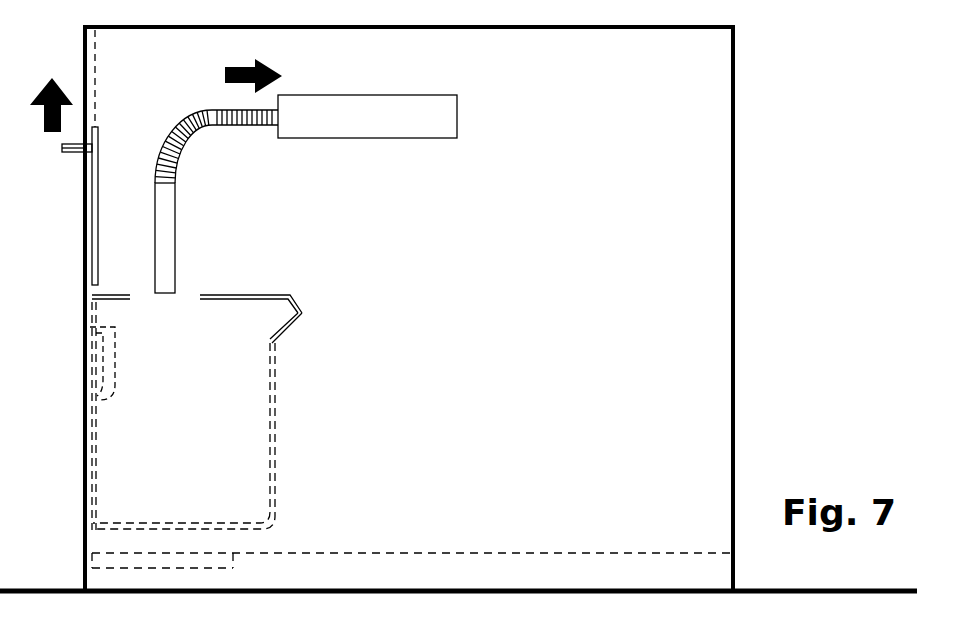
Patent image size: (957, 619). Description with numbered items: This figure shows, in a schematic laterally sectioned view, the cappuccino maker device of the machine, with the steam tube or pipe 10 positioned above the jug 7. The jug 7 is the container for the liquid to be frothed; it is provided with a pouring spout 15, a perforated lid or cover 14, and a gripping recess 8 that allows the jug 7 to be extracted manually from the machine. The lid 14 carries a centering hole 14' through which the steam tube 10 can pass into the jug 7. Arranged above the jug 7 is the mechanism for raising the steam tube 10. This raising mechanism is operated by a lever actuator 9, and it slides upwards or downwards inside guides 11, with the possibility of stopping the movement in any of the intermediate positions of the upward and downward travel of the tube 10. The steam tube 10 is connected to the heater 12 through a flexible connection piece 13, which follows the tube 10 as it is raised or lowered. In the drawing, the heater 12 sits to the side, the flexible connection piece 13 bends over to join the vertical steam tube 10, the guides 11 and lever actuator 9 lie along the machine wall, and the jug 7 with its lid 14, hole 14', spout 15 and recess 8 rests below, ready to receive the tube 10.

The jug 7 is at (183, 416).
The recess 8 is at (98, 365).
The lever actuator 9 is at (75, 153).
The steam tube 10 is at (175, 215).
The guides 11 is at (100, 173).
The heater 12 is at (367, 116).
The flexible connection piece 13 is at (252, 125).
The lid 14 is at (253, 270).
The hole 14' is at (159, 261).
The pouring spout 15 is at (293, 332).